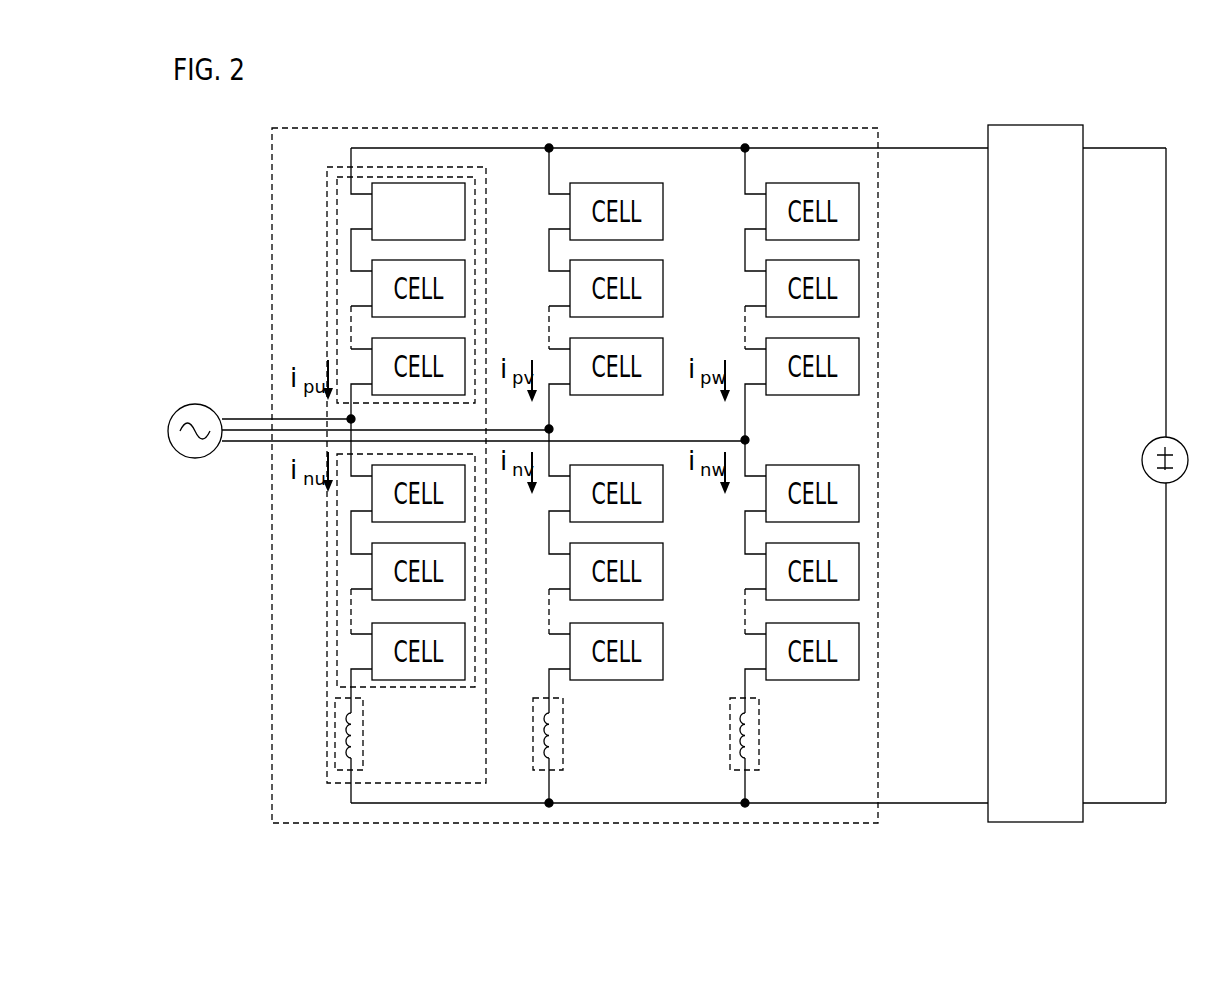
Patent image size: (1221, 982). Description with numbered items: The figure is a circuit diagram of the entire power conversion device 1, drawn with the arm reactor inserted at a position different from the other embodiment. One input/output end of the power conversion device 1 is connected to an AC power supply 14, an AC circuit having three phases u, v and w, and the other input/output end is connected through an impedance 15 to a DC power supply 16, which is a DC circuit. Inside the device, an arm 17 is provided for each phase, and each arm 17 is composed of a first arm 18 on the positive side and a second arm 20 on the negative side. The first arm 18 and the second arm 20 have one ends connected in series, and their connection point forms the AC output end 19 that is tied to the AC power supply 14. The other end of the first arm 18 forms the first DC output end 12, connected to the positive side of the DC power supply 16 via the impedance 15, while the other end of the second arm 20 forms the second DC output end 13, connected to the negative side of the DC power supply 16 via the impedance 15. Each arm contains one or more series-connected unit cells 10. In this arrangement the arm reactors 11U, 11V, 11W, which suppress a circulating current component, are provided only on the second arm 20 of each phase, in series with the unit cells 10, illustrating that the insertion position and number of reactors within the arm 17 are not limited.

The power conversion device 1 is at (762, 128).
The unit cell 10 is at (466, 211).
The arm reactor 11U is at (364, 734).
The arm reactor 11V is at (564, 734).
The arm reactor 11W is at (760, 734).
The first DC output end 12 is at (442, 148).
The second DC output end 13 is at (413, 803).
The AC power supply 14 is at (201, 404).
The impedance 15 is at (1055, 125).
The DC power supply 16 is at (1180, 441).
The arm 17 is at (327, 650).
The first arm 18 is at (337, 203).
The AC output end 19 is at (351, 410).
The second arm 20 is at (337, 540).